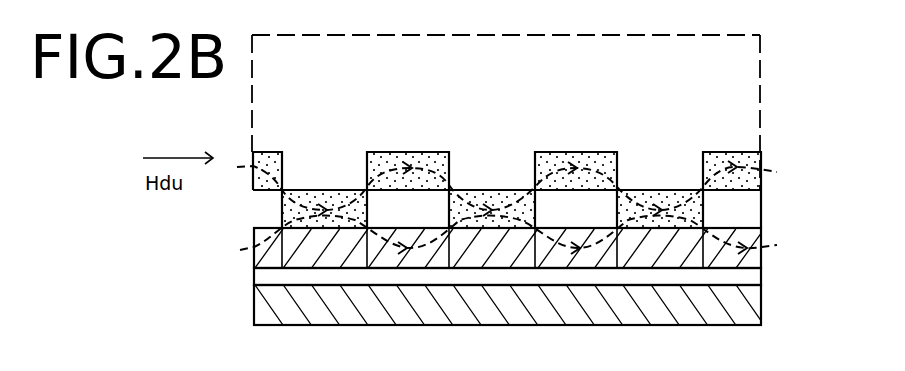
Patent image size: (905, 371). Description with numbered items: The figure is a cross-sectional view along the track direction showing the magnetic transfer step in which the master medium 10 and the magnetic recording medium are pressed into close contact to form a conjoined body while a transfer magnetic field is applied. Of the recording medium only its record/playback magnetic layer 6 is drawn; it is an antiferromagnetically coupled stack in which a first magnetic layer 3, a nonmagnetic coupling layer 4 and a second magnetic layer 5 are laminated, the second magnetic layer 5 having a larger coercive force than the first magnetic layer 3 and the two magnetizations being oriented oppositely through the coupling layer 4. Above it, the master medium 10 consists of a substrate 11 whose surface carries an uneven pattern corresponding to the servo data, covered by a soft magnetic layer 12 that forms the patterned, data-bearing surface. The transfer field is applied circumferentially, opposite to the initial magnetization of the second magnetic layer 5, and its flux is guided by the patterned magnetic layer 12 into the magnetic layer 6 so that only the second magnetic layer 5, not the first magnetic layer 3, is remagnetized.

The first magnetic layer 3 is at (516, 309).
The nonmagnetic coupling layer 4 is at (762, 278).
The second magnetic layer 5 is at (762, 250).
The magnetic layer 6 is at (536, 282).
The master medium 10 is at (782, 118).
The substrate 11 is at (745, 82).
The magnetic layer 12 is at (755, 168).